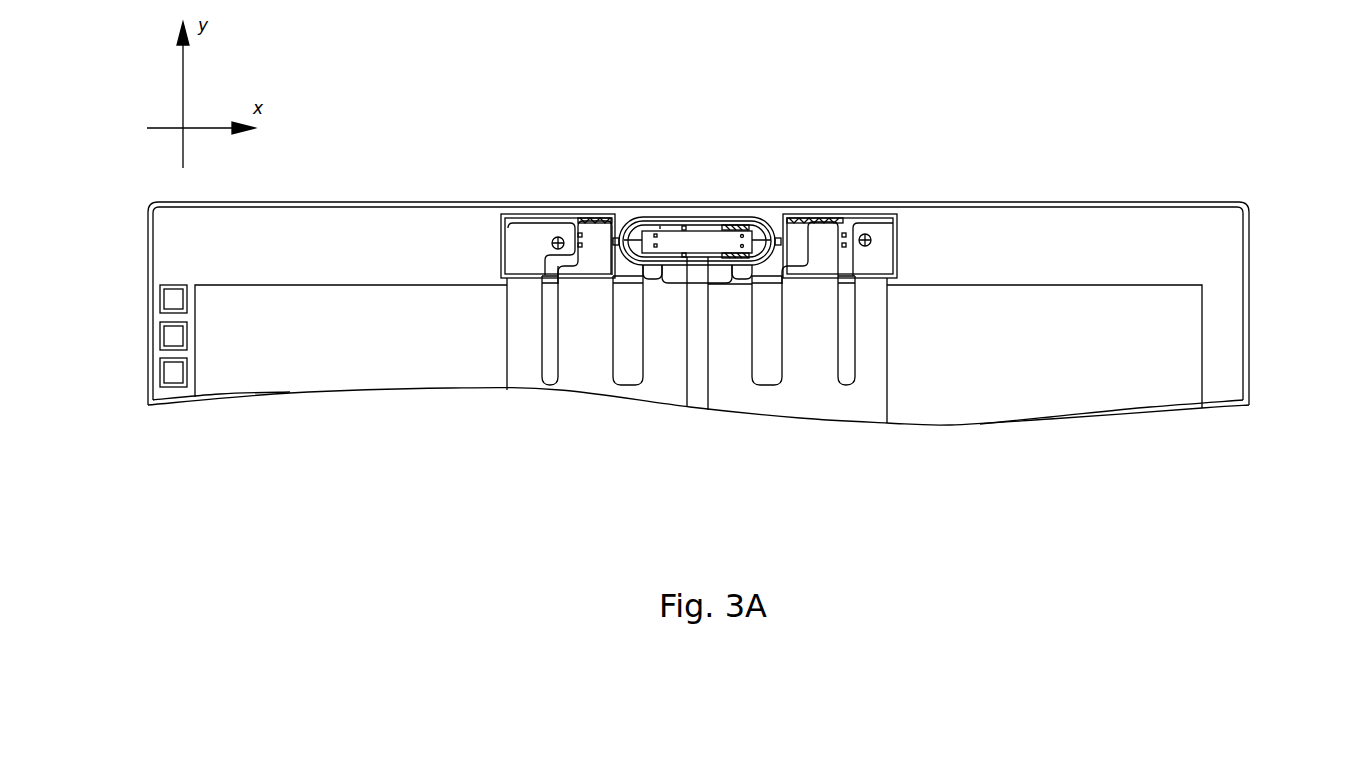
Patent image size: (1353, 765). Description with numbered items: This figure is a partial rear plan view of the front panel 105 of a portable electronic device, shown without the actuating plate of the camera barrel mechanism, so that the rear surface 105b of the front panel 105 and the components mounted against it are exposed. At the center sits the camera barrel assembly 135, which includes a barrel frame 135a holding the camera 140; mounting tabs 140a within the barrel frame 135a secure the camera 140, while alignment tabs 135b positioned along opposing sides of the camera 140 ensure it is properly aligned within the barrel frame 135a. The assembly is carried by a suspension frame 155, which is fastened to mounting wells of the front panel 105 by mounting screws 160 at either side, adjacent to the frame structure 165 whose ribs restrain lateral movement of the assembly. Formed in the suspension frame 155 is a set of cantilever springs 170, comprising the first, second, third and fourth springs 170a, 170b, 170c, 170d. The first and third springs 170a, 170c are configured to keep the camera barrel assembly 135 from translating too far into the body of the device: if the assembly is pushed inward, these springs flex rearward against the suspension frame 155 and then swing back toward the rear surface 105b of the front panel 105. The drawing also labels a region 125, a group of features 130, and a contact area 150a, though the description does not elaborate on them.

The front panel 105 is at (1250, 242).
The rear surface 105b is at (1132, 240).
The battery 125 is at (698, 346).
The buttons 130 is at (131, 283).
The camera barrel assembly 135 is at (628, 207).
The barrel frame 135a is at (722, 226).
The alignment tabs 135b is at (660, 226).
The camera 140 is at (732, 230).
The mounting tabs 140a is at (656, 245).
The connector pads 150a is at (762, 233).
The suspension frame 155 is at (879, 463).
The mounting screws 160 is at (556, 242).
The frame structure 165 is at (488, 220).
The cantilever springs 170 is at (697, 393).
The first spring 170a is at (592, 325).
The second spring 170b is at (754, 368).
The third spring 170c is at (803, 330).
The fourth spring 170d is at (700, 384).